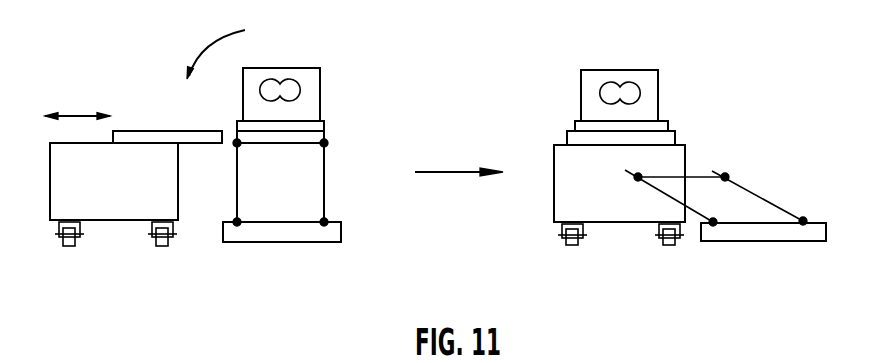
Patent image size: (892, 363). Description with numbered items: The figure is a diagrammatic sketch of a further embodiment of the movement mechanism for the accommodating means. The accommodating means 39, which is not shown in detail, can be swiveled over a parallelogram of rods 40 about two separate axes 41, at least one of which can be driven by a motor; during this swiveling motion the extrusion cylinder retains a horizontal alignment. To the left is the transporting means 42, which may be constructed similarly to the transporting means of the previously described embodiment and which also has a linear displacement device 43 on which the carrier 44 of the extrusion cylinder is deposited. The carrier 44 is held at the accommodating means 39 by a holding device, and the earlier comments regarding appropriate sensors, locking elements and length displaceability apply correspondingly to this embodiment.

The accommodating means 39 is at (340, 127).
The parallelogram of rods 40 is at (344, 181).
The axes 41 is at (714, 228).
The transporting means 42 is at (123, 208).
The linear displacement device 43 is at (155, 130).
The carrier 44 is at (303, 122).